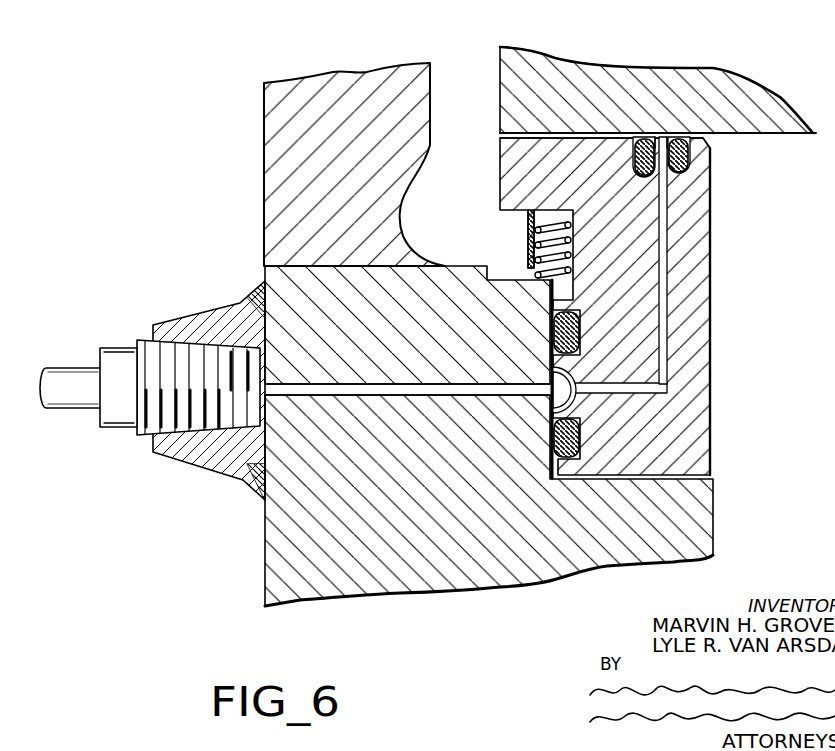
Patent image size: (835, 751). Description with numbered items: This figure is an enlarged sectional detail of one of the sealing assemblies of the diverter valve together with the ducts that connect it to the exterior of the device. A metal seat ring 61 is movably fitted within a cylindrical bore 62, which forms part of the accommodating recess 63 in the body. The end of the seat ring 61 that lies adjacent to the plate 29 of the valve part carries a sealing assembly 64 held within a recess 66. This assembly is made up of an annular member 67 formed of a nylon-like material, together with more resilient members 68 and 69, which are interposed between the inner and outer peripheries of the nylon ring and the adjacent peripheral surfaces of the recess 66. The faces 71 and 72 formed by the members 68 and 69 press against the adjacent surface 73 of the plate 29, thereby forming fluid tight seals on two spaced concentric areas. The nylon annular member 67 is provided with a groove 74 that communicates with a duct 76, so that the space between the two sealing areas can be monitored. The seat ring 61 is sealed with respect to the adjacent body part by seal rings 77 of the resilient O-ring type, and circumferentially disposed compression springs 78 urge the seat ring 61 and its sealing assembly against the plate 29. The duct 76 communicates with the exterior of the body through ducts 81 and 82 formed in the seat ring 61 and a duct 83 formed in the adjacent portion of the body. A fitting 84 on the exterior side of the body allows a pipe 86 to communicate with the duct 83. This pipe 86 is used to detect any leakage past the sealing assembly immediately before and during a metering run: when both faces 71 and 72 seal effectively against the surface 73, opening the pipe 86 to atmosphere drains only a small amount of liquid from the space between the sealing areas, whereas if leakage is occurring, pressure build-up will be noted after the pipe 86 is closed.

The plate 29 is at (765, 95).
The surface 73 is at (784, 134).
The seat ring 61 is at (712, 276).
The sealing assembly 64 is at (700, 175).
The resilient member 68 is at (707, 157).
The resilient member 69 is at (633, 150).
The face 71 is at (682, 138).
The annular member 67 is at (659, 137).
The groove 74 is at (665, 133).
The face 72 is at (641, 135).
The recess 66 is at (643, 176).
The duct 76 is at (672, 177).
The compression spring 78 is at (572, 258).
The duct 81 is at (664, 322).
The duct 82 is at (636, 394).
The seal ring 77 is at (552, 334).
The cylindrical bore 62 is at (548, 396).
The accommodating recess 63 is at (557, 482).
The duct 83 is at (360, 392).
The fitting 84 is at (202, 314).
The pipe 86 is at (72, 370).